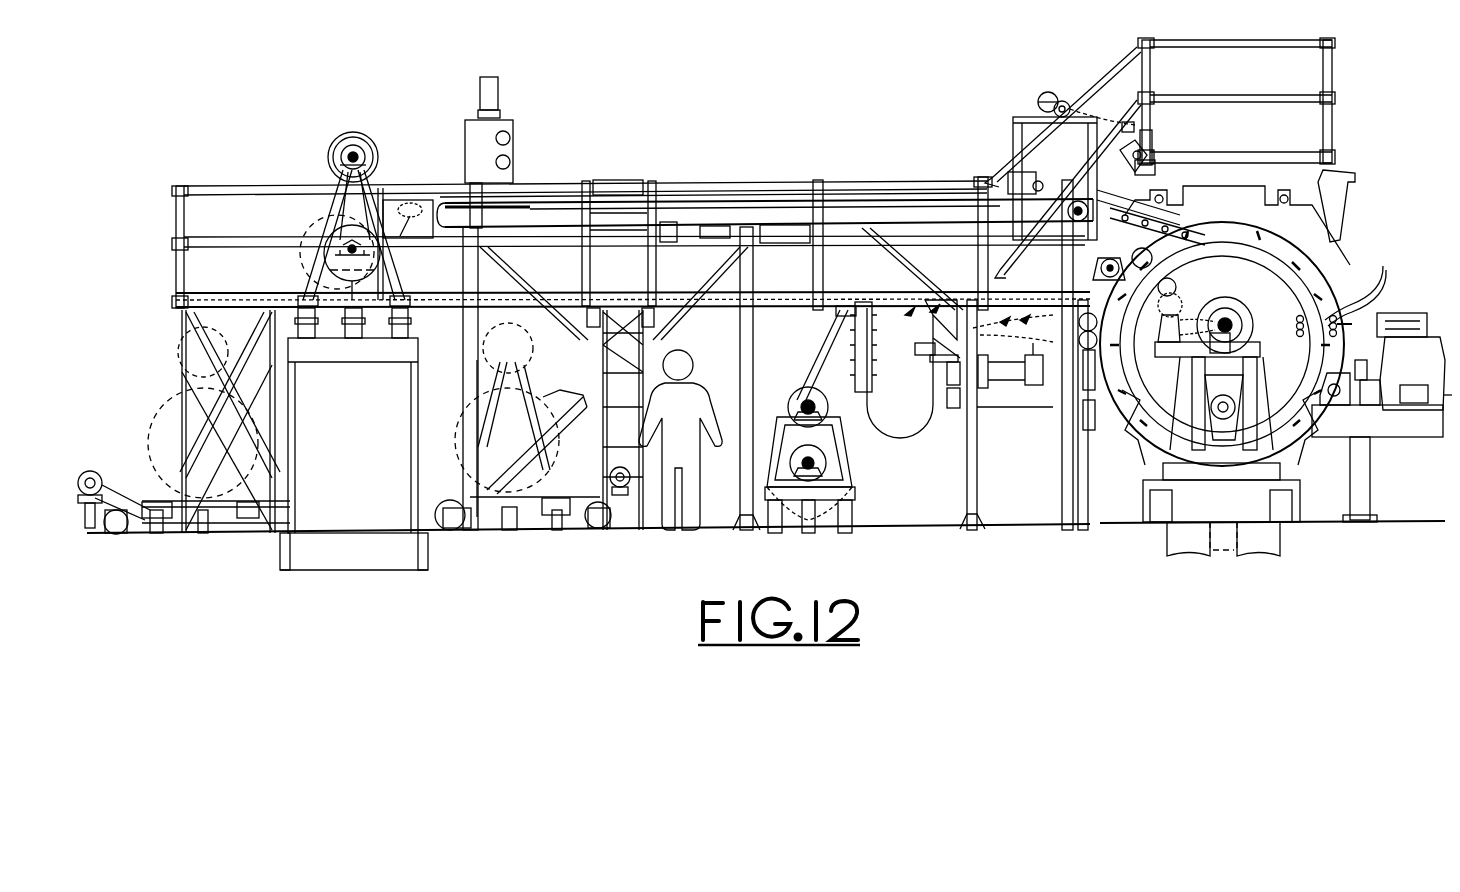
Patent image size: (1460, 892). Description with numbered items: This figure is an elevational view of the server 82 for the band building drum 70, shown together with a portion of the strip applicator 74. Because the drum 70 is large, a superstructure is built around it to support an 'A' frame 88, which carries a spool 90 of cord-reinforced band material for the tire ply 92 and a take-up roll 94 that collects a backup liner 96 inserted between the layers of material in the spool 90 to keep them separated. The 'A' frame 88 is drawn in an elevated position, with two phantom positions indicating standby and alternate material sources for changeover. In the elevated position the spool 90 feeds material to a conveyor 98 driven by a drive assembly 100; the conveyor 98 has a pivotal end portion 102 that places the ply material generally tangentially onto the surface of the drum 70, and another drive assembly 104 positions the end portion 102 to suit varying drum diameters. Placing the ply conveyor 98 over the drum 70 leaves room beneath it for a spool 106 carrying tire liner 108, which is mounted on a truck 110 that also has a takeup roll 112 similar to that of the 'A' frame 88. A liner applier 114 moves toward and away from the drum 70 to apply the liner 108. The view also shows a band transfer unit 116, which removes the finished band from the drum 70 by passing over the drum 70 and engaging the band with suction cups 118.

The drum 70 is at (1302, 270).
The strip applicator 74 is at (1396, 312).
The server 82 is at (852, 87).
The 'A' frame 88 is at (317, 228).
The spool 90 is at (317, 200).
The tire ply 92 is at (437, 200).
The take-up roll 94 is at (352, 146).
The backup liner 96 is at (315, 230).
The conveyor 98 is at (737, 197).
The drive assembly 100 is at (1037, 173).
The pivotal end portion 102 is at (1197, 220).
The drive assembly 104 is at (1062, 101).
The spool 106 is at (825, 457).
The tire liner 108 is at (822, 353).
The truck 110 is at (857, 477).
The takeup roll 112 is at (803, 392).
The liner applier 114 is at (1085, 353).
The band transfer unit 116 is at (1120, 410).
The suction cups 118 is at (1357, 288).